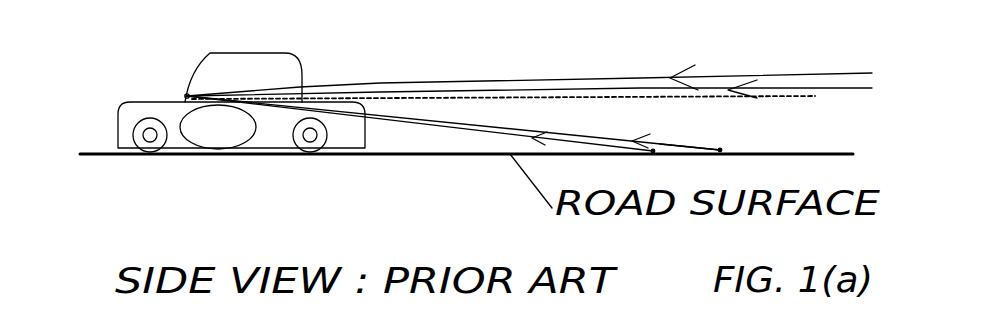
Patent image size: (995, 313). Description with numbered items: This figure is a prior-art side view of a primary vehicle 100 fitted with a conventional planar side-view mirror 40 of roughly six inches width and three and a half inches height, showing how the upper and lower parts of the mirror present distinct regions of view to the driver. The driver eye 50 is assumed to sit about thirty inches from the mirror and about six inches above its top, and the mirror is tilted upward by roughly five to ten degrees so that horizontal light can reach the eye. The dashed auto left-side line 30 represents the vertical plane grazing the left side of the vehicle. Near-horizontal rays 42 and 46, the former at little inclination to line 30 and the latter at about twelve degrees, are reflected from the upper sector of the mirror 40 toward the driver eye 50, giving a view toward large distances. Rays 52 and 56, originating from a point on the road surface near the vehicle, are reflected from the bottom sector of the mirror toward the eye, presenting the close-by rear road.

The primary vehicle 100 is at (241, 127).
The mirror 40 is at (187, 95).
The driver eye 50 is at (190, 96).
The near-horizontal ray 42 is at (780, 74).
The near-horizontal ray 46 is at (783, 92).
The auto left-side line 30 is at (503, 97).
The ray 56 is at (595, 145).
The ray 52 is at (675, 145).